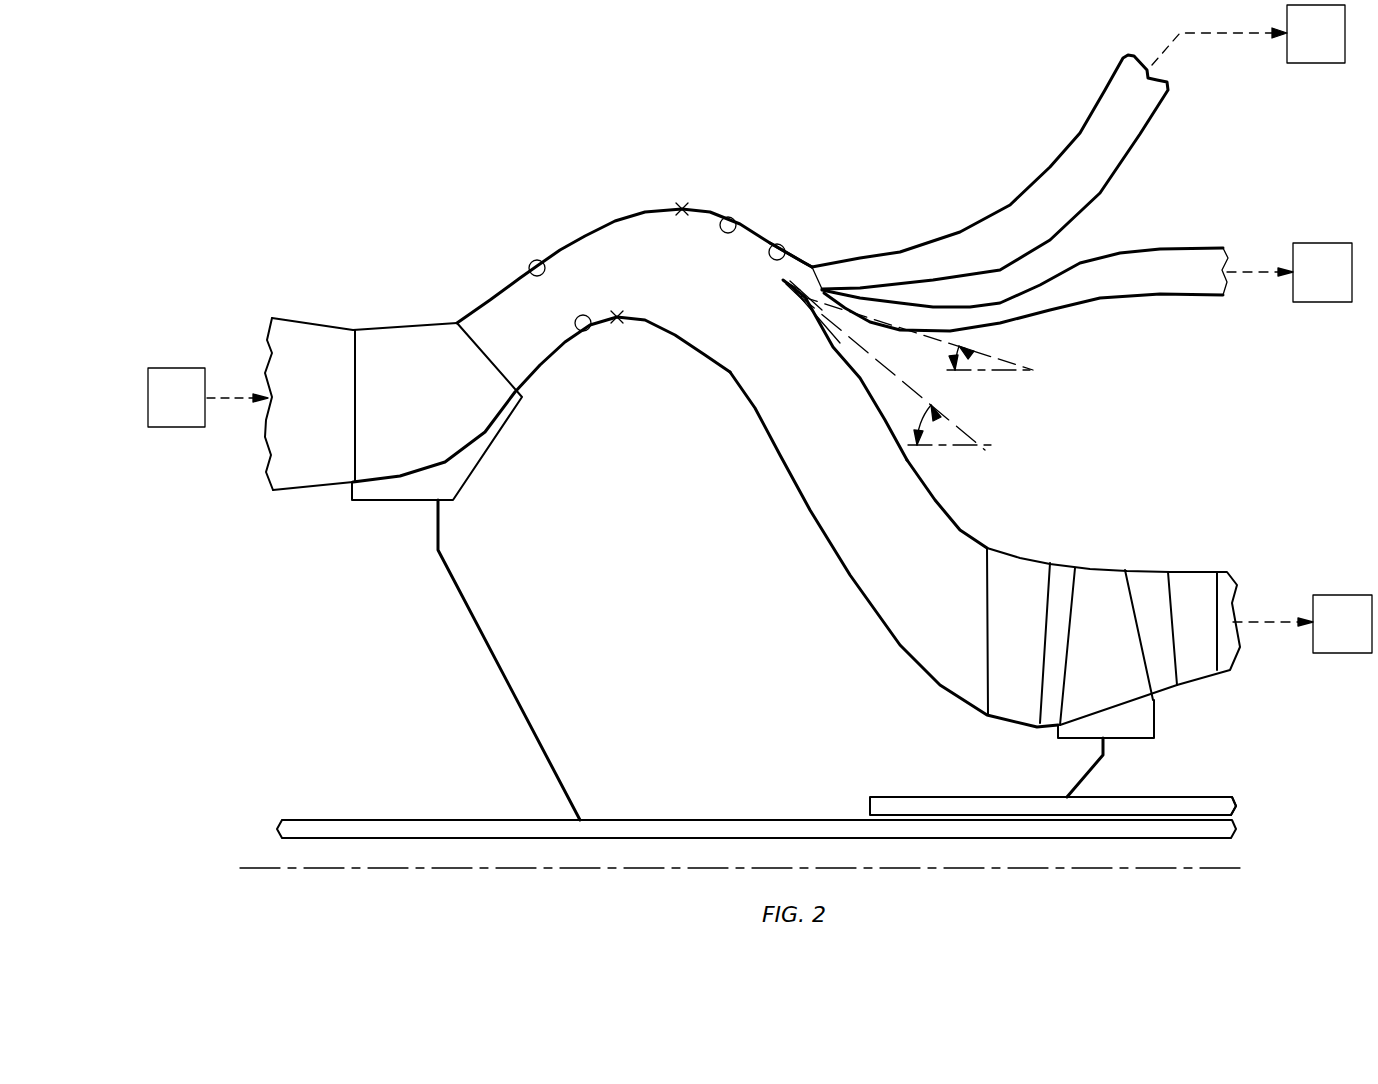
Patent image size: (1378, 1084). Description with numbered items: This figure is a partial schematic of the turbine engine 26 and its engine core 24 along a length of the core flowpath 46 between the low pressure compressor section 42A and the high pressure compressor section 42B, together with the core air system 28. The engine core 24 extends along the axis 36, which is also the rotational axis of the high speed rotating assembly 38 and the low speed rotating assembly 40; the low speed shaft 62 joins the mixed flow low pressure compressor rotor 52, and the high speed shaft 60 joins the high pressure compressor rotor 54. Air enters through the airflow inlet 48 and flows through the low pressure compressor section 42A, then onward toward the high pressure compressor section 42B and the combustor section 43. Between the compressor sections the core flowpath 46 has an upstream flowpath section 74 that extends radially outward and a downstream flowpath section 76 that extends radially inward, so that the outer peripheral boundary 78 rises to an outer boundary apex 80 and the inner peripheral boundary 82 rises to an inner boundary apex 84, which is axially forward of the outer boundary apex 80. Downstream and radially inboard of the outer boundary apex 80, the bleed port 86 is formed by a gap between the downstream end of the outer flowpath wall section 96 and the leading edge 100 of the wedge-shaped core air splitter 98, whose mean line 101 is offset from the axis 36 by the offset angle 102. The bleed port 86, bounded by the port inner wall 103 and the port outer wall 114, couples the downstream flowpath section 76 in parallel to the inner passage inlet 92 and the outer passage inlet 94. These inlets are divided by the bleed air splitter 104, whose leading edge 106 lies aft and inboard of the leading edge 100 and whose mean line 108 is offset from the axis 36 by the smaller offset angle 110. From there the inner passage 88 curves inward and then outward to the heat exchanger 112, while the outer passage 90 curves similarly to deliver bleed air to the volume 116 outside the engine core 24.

The engine core 24 is at (247, 98).
The turbine engine 26 is at (247, 98).
The core air system 28 is at (915, 100).
The axis 36 is at (272, 868).
The high speed rotating assembly 38 is at (1268, 790).
The low speed rotating assembly 40 is at (265, 792).
The low pressure compressor section 42A is at (362, 252).
The high pressure compressor section 42B is at (1160, 534).
The combustor section 43 is at (1302, 624).
The core flowpath 46 is at (361, 404).
The airflow inlet 48 is at (208, 397).
The low pressure compressor rotor 52 is at (415, 540).
The high pressure compressor rotor 54 is at (1178, 735).
The high speed shaft 60 is at (960, 797).
The low speed shaft 62 is at (760, 818).
The upstream flowpath section 74 is at (560, 366).
The downstream flowpath section 76 is at (750, 432).
The outer peripheral boundary 78 is at (528, 262).
The outer boundary apex 80 is at (680, 200).
The inner peripheral boundary 82 is at (588, 330).
The inner boundary apex 84 is at (618, 310).
The bleed port 86 is at (808, 243).
The inner passage 88 is at (1090, 275).
The outer passage 90 is at (1075, 190).
The inner passage inlet 92 is at (815, 287).
The outer passage inlet 94 is at (822, 260).
The outer flowpath wall section 96 is at (729, 216).
The core air splitter 98 is at (775, 300).
The leading edge of core air splitter 100 is at (778, 281).
The mean line of core air splitter 101 is at (873, 358).
The offset angle 102 is at (913, 422).
The port inner wall 103 is at (780, 278).
The bleed air splitter 104 is at (855, 284).
The leading edge of bleed air splitter 106 is at (822, 287).
The mean line of bleed air splitter 108 is at (953, 342).
The offset angle 110 is at (947, 355).
The heat exchanger 112 is at (1289, 272).
The port outer wall 114 is at (776, 244).
The volume 116 is at (1248, 35).